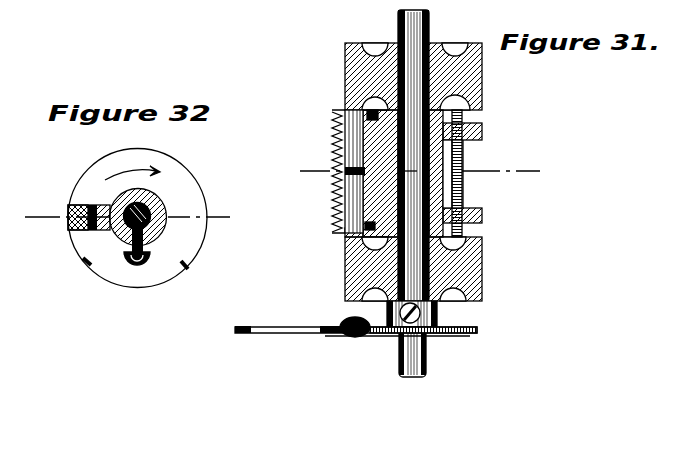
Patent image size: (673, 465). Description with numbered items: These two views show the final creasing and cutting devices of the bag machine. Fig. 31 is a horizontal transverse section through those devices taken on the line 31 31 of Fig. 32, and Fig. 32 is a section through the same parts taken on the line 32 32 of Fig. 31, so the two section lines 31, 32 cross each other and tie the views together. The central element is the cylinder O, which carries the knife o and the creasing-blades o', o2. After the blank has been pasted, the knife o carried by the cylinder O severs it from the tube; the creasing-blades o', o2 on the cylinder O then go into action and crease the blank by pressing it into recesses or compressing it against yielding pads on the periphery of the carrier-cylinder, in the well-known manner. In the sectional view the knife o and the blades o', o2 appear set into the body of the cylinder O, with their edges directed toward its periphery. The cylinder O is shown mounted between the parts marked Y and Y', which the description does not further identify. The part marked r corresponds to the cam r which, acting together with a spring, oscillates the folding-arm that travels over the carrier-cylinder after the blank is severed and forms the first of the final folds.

In FIG. 32, the section line 31 31 is at (124, 218).
In FIG. 31, the section line 32 32 is at (416, 174).
In FIG. 31, the knife o is at (337, 171).
In FIG. 32, the knife o is at (79, 242).
In FIG. 31, the creasing-blade o' is at (342, 158).
In FIG. 31, the cylinder O is at (413, 173).
In FIG. 32, the cylinder O is at (137, 218).
In FIG. 31, the creasing-blade o2 is at (462, 154).
In FIG. 32, the creasing-blade o2 is at (188, 268).
In FIG. 31, the upper bearing block Y is at (423, 76).
In FIG. 31, the lower bearing block Y' is at (424, 269).
In FIG. 31, the cam r is at (467, 328).